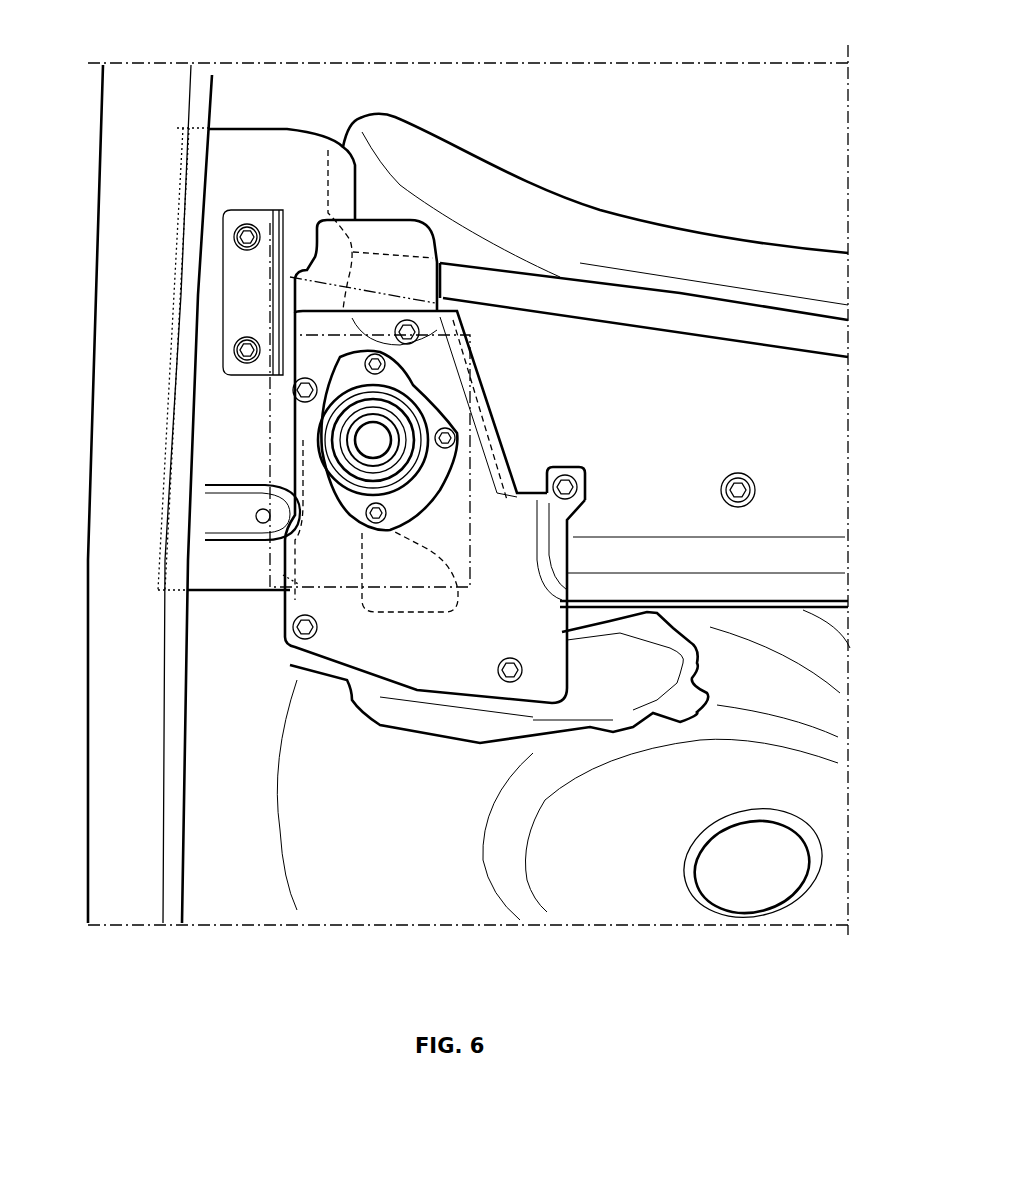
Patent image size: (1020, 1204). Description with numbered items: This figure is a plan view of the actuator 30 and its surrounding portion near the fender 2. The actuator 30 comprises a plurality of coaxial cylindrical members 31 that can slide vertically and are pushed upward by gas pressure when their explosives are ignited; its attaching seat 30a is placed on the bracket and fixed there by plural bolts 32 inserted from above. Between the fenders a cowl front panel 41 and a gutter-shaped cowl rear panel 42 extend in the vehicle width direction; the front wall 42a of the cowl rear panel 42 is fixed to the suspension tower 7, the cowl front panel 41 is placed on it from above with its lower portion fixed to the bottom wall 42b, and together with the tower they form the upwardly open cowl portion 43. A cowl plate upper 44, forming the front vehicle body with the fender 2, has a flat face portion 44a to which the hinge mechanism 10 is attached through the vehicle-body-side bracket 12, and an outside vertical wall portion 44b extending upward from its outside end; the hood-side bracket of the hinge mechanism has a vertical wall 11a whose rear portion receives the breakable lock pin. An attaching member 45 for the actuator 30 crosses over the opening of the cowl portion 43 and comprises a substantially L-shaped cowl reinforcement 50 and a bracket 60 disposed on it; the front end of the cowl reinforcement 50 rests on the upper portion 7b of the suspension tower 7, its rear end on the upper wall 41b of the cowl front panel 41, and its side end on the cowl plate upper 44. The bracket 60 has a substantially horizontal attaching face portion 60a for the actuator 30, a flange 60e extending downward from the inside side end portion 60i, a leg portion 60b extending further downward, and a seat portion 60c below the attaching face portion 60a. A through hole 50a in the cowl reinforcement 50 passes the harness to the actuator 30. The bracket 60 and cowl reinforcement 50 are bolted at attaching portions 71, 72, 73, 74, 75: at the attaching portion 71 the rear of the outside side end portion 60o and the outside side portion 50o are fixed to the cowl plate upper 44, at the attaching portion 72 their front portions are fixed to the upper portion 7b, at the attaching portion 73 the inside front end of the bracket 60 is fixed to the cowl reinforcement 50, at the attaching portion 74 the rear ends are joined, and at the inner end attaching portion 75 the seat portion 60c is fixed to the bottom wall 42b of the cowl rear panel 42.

The fender 2 is at (95, 468).
The suspension tower 7 is at (798, 797).
The upper portion of the suspension tower 7b is at (456, 885).
The hinge mechanism 10 is at (220, 306).
The vertical wall of the hood-side bracket 11a is at (265, 452).
The vehicle-body-side bracket 12 is at (243, 216).
The actuator 30 is at (328, 482).
The attaching seat 30a is at (438, 420).
The cylindrical members 31 is at (350, 396).
The bolts 32 is at (367, 356).
The cowl front panel 41 is at (738, 256).
The upper wall of the cowl front panel 41b is at (450, 250).
The cowl rear panel 42 is at (795, 478).
The front wall of the cowl rear panel 42a is at (776, 556).
The bottom wall of the cowl rear panel 42b is at (805, 432).
The cowl portion 43 is at (732, 382).
The cowl plate upper 44 is at (262, 126).
The flat face portion 44a is at (280, 160).
The outside vertical wall portion 44b is at (172, 183).
The attaching member 45 is at (276, 624).
The cowl reinforcement 50 is at (452, 742).
The through hole 50a is at (413, 613).
The outside side portion of the cowl reinforcement 50o is at (276, 568).
The bracket 60 is at (413, 694).
The attaching face portion 60a is at (438, 382).
The leg portion 60b is at (534, 516).
The seat portion 60c is at (578, 466).
The flange 60e is at (480, 433).
The inside side end portion 60i is at (558, 546).
The outside side end portion 60o is at (284, 601).
The attaching portion 71 is at (299, 389).
The attaching portion 72 is at (284, 638).
The attaching portion 73 is at (532, 668).
The attaching portion 74 is at (416, 331).
The inner end attaching portion 75 is at (583, 499).